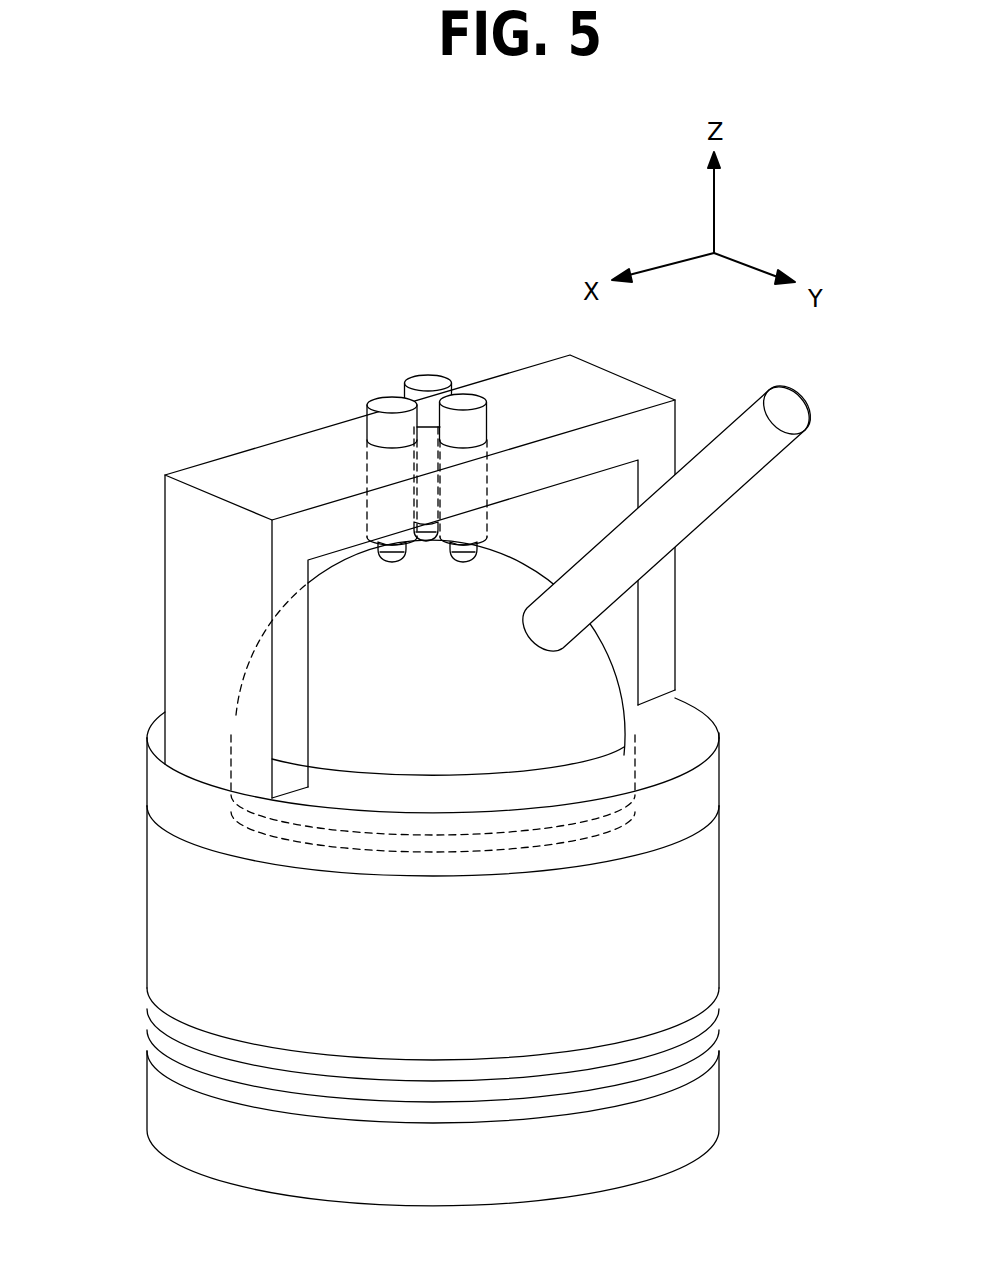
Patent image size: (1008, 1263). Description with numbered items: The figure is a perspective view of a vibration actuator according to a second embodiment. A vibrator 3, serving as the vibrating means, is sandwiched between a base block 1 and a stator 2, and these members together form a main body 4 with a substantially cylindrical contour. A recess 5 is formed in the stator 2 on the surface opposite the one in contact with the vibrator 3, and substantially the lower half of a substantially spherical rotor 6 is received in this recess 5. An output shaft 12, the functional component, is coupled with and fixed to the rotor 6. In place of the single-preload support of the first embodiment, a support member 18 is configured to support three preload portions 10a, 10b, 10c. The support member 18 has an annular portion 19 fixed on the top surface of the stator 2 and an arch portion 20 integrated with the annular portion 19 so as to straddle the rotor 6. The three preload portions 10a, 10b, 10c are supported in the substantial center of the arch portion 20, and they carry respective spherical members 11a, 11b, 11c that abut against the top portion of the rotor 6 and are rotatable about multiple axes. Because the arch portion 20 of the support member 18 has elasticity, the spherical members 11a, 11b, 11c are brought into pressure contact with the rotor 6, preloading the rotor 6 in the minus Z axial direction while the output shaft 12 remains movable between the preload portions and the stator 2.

The base block 1 is at (718, 1103).
The stator 2 is at (719, 920).
The vibrator 3 is at (718, 1022).
The main body 4 is at (748, 864).
The recess 5 is at (310, 833).
The rotor 6 is at (603, 643).
The preload portion 10a is at (370, 397).
The preload portion 10b is at (428, 373).
The preload portion 10c is at (477, 395).
The spherical member 11a is at (392, 564).
The spherical member 11b is at (427, 545).
The spherical member 11c is at (463, 564).
The output shaft 12 is at (733, 503).
The support member 18 is at (128, 678).
The annular portion 19 is at (719, 777).
The arch portion 20 is at (165, 565).